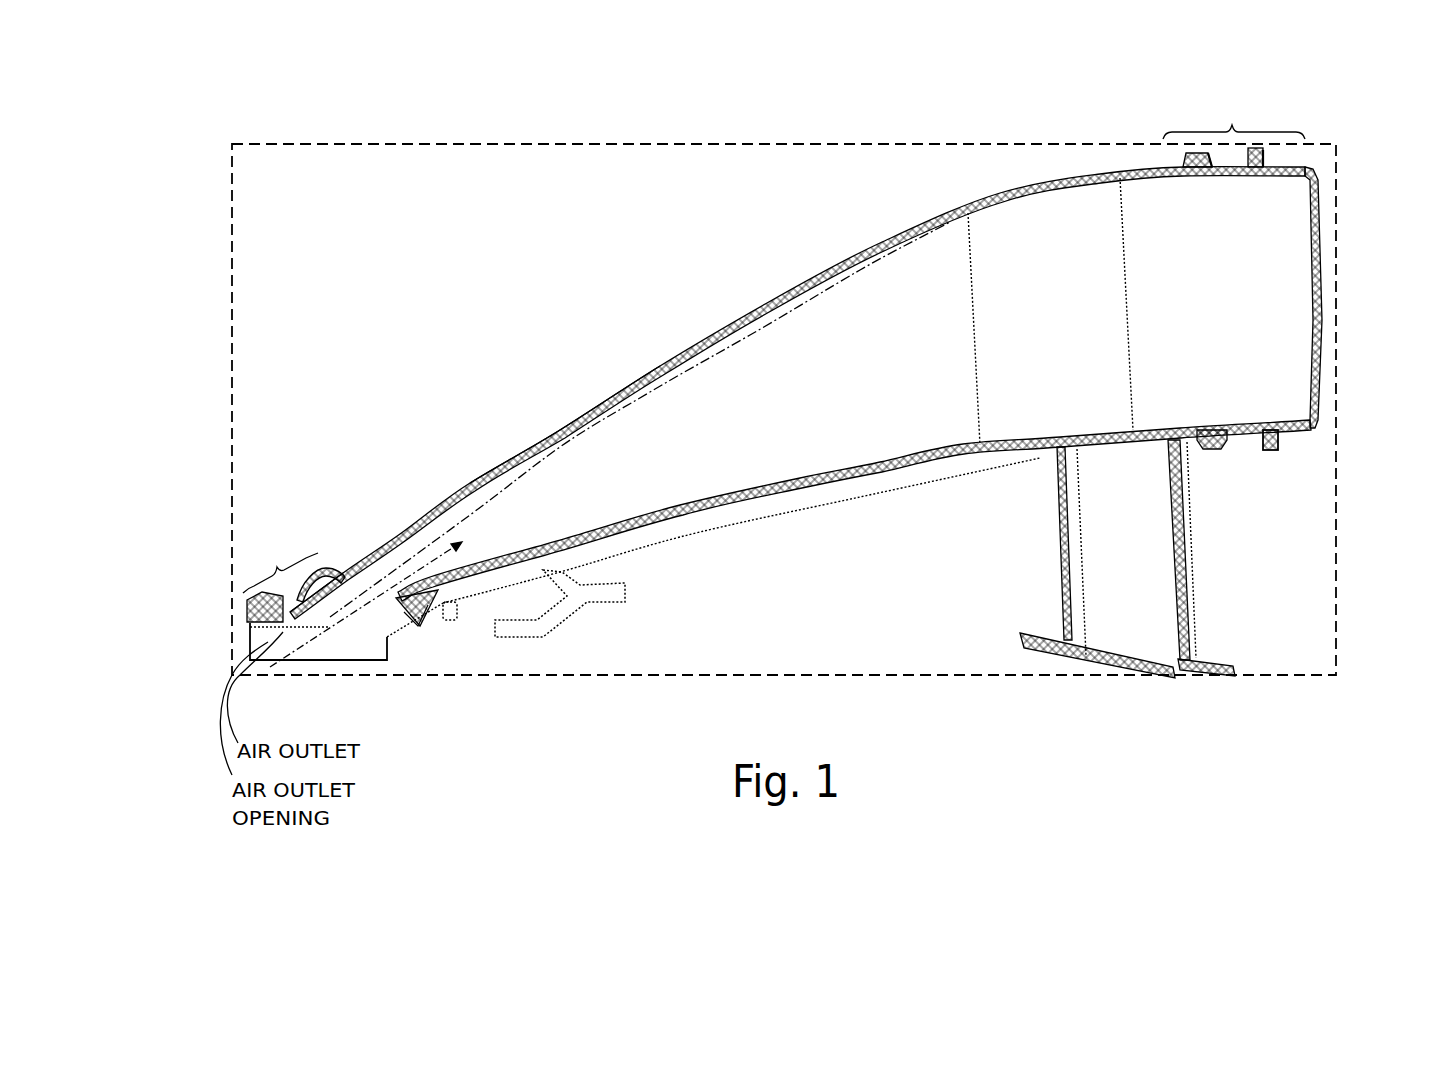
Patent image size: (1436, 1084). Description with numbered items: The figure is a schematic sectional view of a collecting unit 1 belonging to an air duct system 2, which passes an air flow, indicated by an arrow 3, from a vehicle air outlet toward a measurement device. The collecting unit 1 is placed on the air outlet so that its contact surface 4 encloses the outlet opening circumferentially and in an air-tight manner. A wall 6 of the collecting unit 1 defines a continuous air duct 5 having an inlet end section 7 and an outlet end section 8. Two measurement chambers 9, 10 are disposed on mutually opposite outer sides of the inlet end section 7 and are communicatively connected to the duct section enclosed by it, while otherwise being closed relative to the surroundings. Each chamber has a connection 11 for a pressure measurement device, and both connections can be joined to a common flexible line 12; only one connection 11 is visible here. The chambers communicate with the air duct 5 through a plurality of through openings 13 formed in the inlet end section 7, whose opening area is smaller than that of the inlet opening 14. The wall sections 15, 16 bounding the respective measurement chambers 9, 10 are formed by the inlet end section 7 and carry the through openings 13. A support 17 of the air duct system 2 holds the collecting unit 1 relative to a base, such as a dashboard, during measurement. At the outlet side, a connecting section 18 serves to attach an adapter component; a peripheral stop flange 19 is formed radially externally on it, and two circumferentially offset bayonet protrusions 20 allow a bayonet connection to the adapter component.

The collecting unit 1 is at (768, 297).
The air duct system 2 is at (877, 128).
The arrow 3 is at (398, 590).
The contact surface 4 is at (353, 630).
The air duct 5 is at (640, 412).
The wall 6 is at (582, 418).
The inlet end section 7 is at (280, 564).
The outlet end section 8 is at (1234, 115).
The measurement chamber 9 is at (322, 570).
The measurement chamber 10 is at (415, 622).
The connection 11 is at (438, 620).
The flexible line 12 is at (598, 604).
The through openings 13 is at (250, 622).
The inlet opening 14 is at (340, 630).
The wall section 15 is at (340, 582).
The wall section 16 is at (432, 600).
The support 17 is at (1160, 562).
The connecting section 18 is at (1307, 430).
The stop flange 19 is at (1180, 160).
The bayonet protrusions 20 is at (1263, 152).